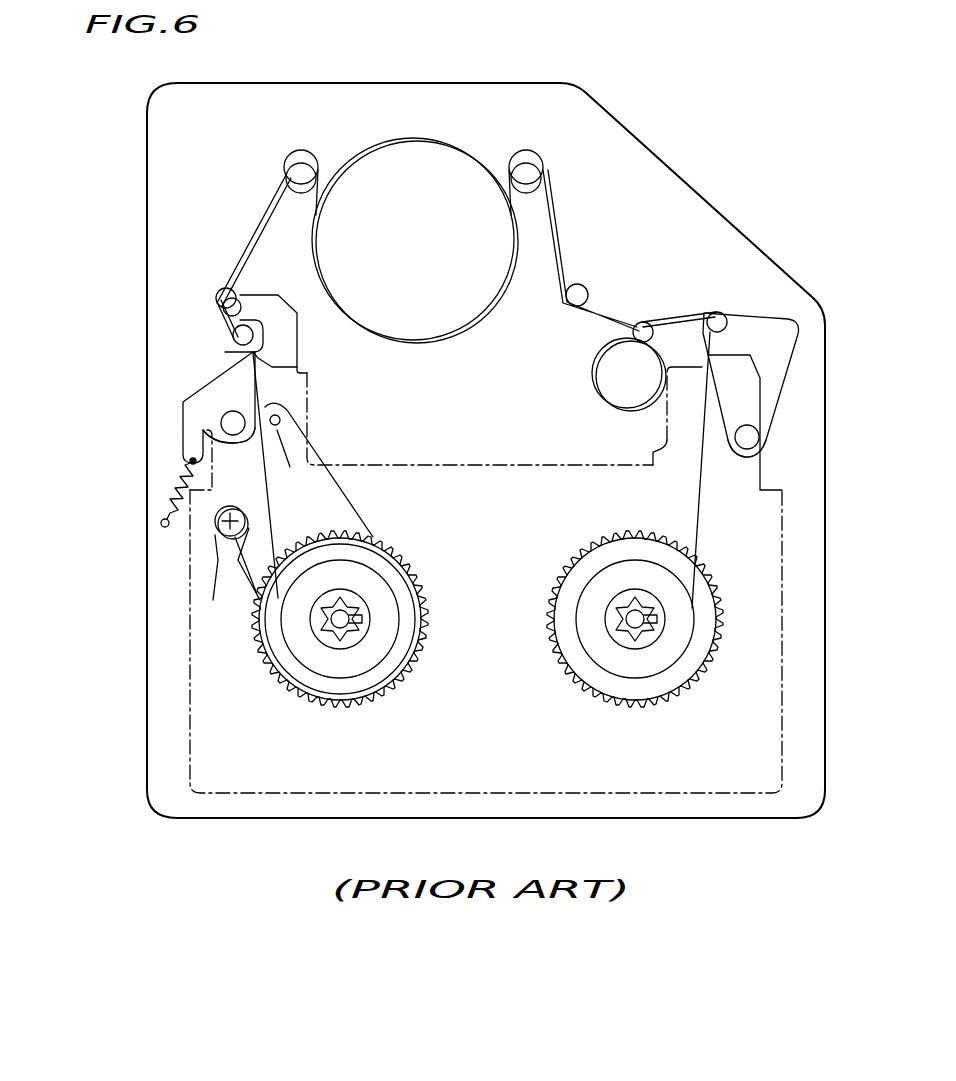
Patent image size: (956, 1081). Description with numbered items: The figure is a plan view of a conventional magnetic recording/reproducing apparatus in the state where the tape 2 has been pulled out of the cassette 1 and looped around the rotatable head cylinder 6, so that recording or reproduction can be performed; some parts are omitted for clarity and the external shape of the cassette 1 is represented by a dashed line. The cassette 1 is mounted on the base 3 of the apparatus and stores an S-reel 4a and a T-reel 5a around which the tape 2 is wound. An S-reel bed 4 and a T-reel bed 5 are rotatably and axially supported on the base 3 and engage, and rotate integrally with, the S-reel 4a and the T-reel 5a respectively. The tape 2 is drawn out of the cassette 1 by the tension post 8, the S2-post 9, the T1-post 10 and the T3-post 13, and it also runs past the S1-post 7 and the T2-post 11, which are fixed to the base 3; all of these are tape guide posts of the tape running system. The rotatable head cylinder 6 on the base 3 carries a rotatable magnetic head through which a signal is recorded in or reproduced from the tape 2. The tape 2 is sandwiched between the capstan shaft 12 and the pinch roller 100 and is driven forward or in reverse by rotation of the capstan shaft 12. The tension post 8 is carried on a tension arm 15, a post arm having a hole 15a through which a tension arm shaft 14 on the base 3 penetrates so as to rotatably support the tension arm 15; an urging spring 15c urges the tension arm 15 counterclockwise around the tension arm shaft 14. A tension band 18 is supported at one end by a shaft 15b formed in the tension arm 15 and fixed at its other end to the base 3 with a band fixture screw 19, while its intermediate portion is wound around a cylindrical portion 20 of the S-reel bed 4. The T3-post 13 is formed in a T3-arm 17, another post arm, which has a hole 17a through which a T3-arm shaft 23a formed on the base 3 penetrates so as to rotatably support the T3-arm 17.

The cassette 1 is at (782, 585).
The tape 2 is at (558, 232).
The base 3 is at (693, 184).
The S-reel bed 4 is at (362, 645).
The S-reel 4a is at (310, 650).
The T-reel bed 5 is at (566, 578).
The T-reel 5a is at (630, 585).
The rotatable head cylinder 6 is at (413, 163).
The S1-post 7 is at (240, 332).
The tension post 8 is at (222, 297).
The S2-post 9 is at (302, 165).
The T1-post 10 is at (532, 160).
The T2-post 11 is at (585, 290).
The capstan shaft 12 is at (645, 325).
The T3-post 13 is at (715, 314).
The tension arm shaft 14 is at (228, 421).
The tension arm 15 is at (232, 378).
The hole 15a is at (222, 402).
The shaft 15b is at (280, 432).
The urging spring 15c is at (172, 487).
The T3-arm 17 is at (767, 326).
The hole 17a is at (752, 420).
The tension band 18 is at (250, 585).
The band fixture screw 19 is at (226, 540).
The cylindrical portion 20 is at (400, 640).
The T3-arm shaft 23a is at (746, 450).
The pinch roller 100 is at (610, 380).